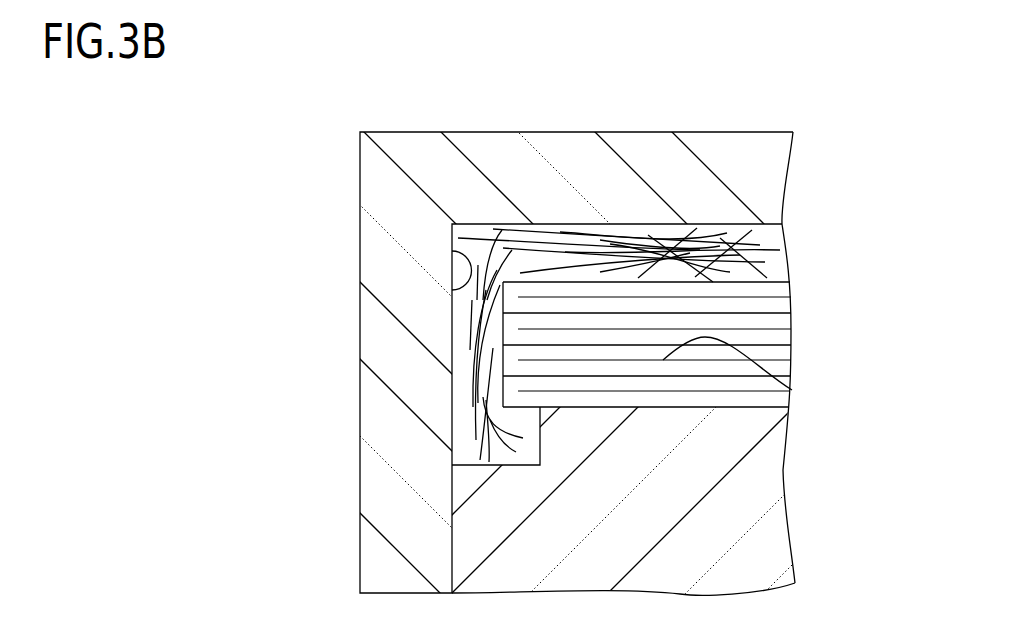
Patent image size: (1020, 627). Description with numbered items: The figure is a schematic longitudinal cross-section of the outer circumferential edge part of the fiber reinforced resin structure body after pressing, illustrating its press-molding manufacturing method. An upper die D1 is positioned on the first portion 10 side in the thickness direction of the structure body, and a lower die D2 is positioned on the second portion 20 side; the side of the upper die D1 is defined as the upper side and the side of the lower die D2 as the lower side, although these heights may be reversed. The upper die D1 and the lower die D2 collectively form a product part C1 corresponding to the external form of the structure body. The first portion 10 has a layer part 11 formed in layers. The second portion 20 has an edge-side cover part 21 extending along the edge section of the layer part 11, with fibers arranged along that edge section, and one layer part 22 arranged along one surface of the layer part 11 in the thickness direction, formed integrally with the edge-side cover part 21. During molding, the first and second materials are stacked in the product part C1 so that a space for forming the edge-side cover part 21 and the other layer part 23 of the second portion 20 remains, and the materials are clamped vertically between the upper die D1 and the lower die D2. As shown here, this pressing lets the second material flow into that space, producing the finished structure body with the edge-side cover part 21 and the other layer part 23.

The upper die D1 is at (398, 132).
The lower die D2 is at (783, 473).
The first portion 10 is at (755, 338).
The layer part 11 is at (792, 390).
The second portion 20 is at (534, 259).
The edge-side cover part 21 is at (465, 365).
The one layer part 22 is at (628, 253).
The other layer part 23 is at (510, 450).
The product part C1 is at (452, 291).